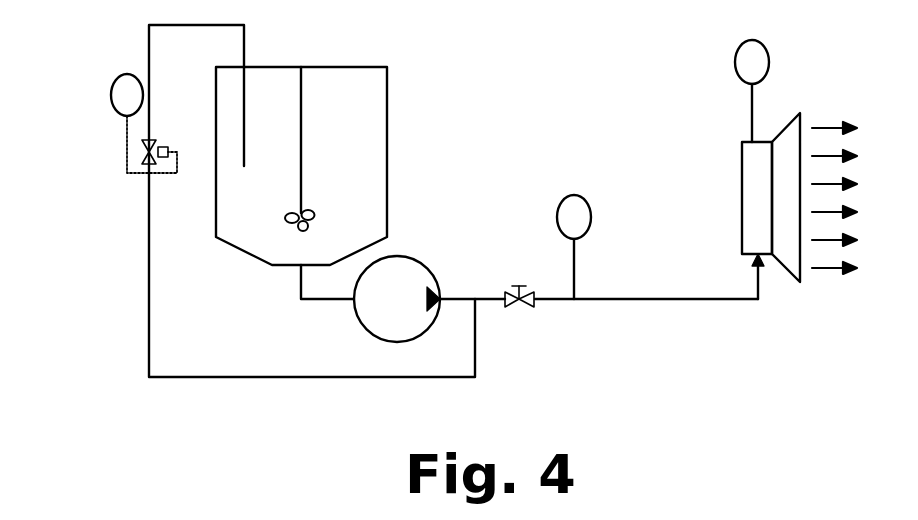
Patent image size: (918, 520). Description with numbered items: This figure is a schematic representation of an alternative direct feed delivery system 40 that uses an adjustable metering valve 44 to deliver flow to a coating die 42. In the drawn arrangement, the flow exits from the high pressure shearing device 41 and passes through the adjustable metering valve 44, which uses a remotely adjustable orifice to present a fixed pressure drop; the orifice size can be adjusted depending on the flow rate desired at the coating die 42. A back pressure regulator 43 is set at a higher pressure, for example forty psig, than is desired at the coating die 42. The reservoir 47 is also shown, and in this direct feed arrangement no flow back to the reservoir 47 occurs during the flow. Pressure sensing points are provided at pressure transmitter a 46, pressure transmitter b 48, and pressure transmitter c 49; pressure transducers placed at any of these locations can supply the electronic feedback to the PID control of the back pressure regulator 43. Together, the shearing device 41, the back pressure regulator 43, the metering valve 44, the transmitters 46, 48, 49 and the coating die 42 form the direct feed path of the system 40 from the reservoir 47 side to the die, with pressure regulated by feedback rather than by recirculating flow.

The direct feed delivery system 40 is at (124, 360).
The high pressure shearing device 41 is at (360, 322).
The coating die 42 is at (783, 268).
The back pressure regulator 43 is at (145, 163).
The adjustable metering valve 44 is at (506, 292).
The pressure transmitter a 46 is at (117, 82).
The reservoir 47 is at (370, 118).
The pressure transmitter b 48 is at (591, 226).
The pressure transmitter c 49 is at (770, 62).